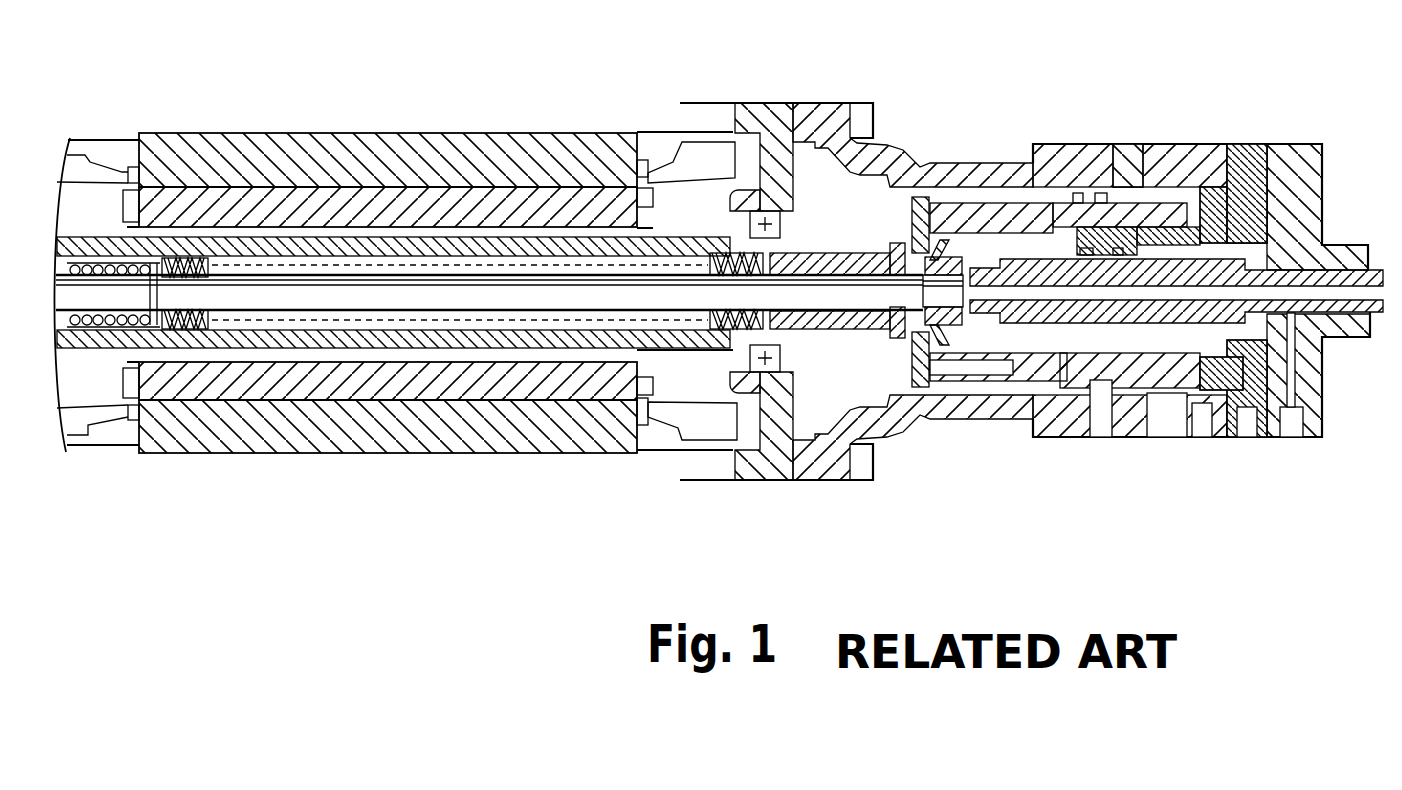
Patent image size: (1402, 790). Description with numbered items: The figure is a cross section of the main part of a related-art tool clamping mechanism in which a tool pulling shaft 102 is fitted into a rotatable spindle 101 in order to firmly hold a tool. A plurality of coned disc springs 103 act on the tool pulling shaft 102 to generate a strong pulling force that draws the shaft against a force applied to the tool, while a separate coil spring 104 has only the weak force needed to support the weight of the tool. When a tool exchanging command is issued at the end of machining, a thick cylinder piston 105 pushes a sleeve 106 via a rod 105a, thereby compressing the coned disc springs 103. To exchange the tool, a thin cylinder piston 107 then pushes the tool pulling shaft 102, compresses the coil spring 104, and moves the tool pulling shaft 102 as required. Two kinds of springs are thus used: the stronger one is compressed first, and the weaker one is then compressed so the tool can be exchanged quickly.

The rotatable spindle 101 is at (367, 247).
The tool pulling shaft 102 is at (313, 297).
The coned disc springs 103 is at (703, 250).
The coil spring 104 is at (92, 250).
The thick cylinder piston 105 is at (1092, 212).
The rod 105a is at (924, 240).
The sleeve 106 is at (815, 250).
The thin cylinder piston 107 is at (1220, 273).